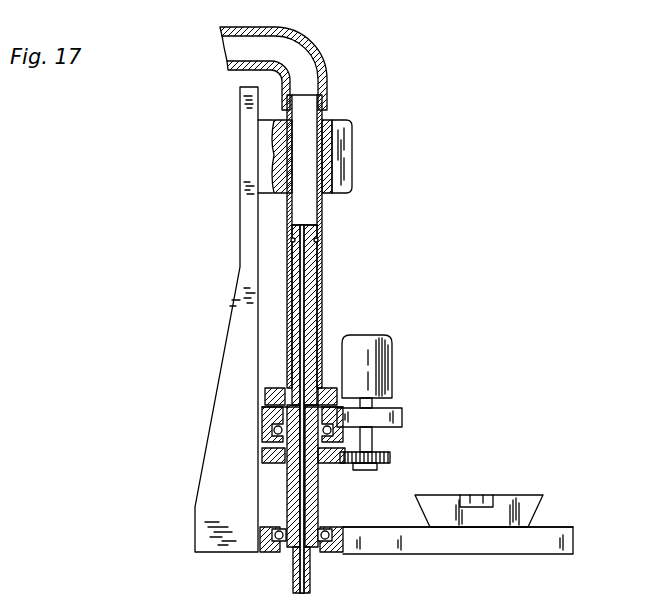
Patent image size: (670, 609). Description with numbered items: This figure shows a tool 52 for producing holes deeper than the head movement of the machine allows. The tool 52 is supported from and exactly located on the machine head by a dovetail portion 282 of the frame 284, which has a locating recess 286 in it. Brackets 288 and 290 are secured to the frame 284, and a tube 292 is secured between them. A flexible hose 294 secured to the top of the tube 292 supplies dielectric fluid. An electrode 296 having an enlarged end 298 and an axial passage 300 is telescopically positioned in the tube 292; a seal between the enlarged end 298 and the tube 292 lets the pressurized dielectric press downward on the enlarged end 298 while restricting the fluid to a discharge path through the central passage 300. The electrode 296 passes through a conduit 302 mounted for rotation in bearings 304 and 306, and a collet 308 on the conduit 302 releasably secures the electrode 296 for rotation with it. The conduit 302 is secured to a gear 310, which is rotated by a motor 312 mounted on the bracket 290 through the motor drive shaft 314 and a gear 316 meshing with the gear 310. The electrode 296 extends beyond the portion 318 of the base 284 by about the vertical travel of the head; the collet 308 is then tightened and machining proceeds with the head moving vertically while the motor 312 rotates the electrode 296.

The tool 52 is at (548, 182).
The dovetail portion 282 is at (430, 495).
The frame 284 is at (203, 466).
The locating recess 286 is at (487, 493).
The bracket 288 is at (352, 162).
The bracket 290 is at (402, 413).
The tube 292 is at (320, 265).
The flexible hose 294 is at (316, 52).
The electrode 296 is at (315, 302).
The enlarged end 298 is at (322, 222).
The passage 300 is at (310, 580).
The conduit 302 is at (318, 517).
The bearing 304 is at (270, 553).
The bearing 306 is at (263, 408).
The collet 308 is at (318, 492).
The gear 310 is at (263, 456).
The motor 312 is at (393, 360).
The motor drive shaft 314 is at (370, 446).
The gear 316 is at (375, 465).
The portion of the base 318 is at (388, 555).